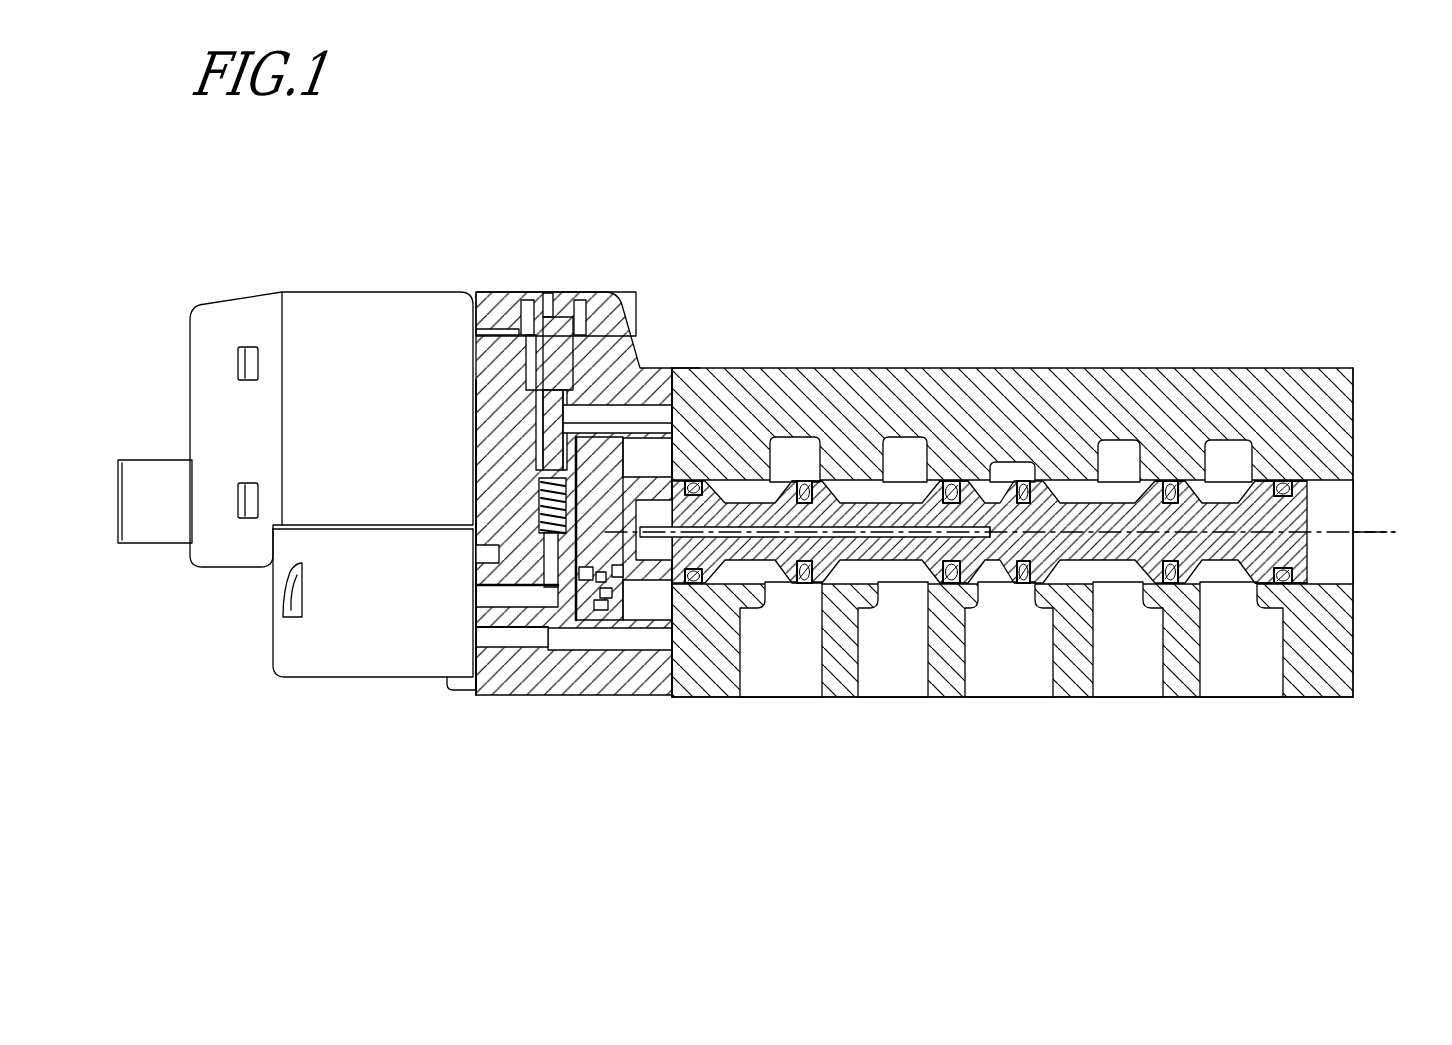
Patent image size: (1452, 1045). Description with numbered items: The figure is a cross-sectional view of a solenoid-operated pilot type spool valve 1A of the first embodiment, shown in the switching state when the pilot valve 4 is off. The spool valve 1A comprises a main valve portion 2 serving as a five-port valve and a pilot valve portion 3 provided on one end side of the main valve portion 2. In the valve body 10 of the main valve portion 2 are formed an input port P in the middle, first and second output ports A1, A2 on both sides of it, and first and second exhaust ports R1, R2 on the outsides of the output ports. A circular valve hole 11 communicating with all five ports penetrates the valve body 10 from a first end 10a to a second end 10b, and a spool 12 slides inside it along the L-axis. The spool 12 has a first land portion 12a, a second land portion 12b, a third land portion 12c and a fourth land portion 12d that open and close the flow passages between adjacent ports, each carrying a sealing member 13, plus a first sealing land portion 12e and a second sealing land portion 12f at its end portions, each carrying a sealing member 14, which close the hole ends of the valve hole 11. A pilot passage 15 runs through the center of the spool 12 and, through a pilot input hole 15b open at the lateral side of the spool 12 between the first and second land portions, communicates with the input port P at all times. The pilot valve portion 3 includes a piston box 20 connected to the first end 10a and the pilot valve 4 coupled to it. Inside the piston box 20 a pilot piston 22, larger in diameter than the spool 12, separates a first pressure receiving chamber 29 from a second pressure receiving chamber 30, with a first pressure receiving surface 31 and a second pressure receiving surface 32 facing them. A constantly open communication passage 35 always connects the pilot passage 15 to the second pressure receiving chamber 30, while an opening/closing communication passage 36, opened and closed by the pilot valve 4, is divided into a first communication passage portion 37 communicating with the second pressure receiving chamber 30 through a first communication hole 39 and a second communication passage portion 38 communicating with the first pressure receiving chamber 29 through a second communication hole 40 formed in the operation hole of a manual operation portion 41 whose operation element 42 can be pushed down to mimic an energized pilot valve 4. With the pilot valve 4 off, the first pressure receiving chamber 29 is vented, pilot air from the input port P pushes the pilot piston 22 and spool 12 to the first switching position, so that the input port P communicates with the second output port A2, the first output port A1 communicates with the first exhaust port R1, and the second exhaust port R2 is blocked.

The spool valve 1A is at (782, 438).
The main valve portion 2 is at (1025, 466).
The pilot valve portion 3 is at (391, 243).
The pilot valve 4 is at (322, 298).
The valve body 10 is at (1014, 380).
The first end 10a is at (664, 368).
The second end 10b is at (1355, 405).
The valve hole 11 is at (1095, 490).
The spool 12 is at (1227, 518).
The first land portion 12a is at (955, 478).
The second land portion 12b is at (1040, 478).
The third land portion 12c is at (812, 472).
The fourth land portion 12d is at (1197, 482).
The first sealing land portion 12e is at (782, 465).
The second sealing land portion 12f is at (1302, 574).
The sealing member 13 is at (808, 482).
The sealing member 14 is at (690, 480).
The pilot passage 15 is at (853, 540).
The pilot input hole 15b is at (992, 548).
The piston box 20 is at (492, 290).
The pilot piston 22 is at (604, 600).
The first pressure receiving chamber 29 is at (550, 538).
The second pressure receiving chamber 30 is at (647, 460).
The first pressure receiving surface 31 is at (575, 555).
The second pressure receiving surface 32 is at (625, 585).
The constantly open communication passage 35 is at (600, 580).
The opening/closing communication passage 36 is at (480, 758).
The first communication passage portion 37 is at (502, 635).
The second communication passage portion 38 is at (478, 597).
The first communication hole 39 is at (640, 590).
The second communication hole 40 is at (542, 472).
The manual operation portion 41 is at (581, 261).
The operation element 42 is at (549, 290).
The first exhaust port R1 is at (775, 682).
The first output port A1 is at (888, 682).
The input port P is at (1027, 682).
The second output port A2 is at (1130, 682).
The second exhaust port R2 is at (1245, 682).
The L-axis L is at (1388, 538).